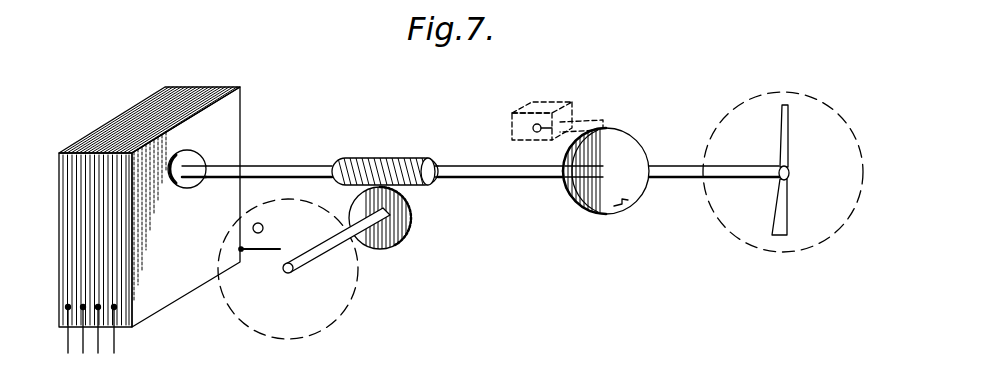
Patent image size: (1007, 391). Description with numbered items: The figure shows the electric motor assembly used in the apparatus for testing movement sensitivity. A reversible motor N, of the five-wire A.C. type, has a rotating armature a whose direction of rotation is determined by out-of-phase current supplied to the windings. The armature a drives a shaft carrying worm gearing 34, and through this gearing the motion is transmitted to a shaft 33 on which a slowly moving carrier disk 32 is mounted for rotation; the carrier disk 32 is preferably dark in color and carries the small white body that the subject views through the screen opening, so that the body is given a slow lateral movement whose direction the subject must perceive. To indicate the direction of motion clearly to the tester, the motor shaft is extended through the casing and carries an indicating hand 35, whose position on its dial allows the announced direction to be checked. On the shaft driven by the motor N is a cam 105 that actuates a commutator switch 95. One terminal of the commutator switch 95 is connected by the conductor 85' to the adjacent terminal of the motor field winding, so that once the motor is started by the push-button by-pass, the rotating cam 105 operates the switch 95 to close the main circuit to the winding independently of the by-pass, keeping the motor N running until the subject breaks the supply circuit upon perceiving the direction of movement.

The reversible motor N is at (281, 98).
The armature a is at (185, 188).
The conductor 85' is at (231, 278).
The carrier disk 32 is at (330, 318).
The shaft 33 is at (365, 249).
The worm gearing 34 is at (393, 157).
The commutator switch 95 is at (545, 113).
The cam 105 is at (631, 137).
The indicating hand 35 is at (788, 128).